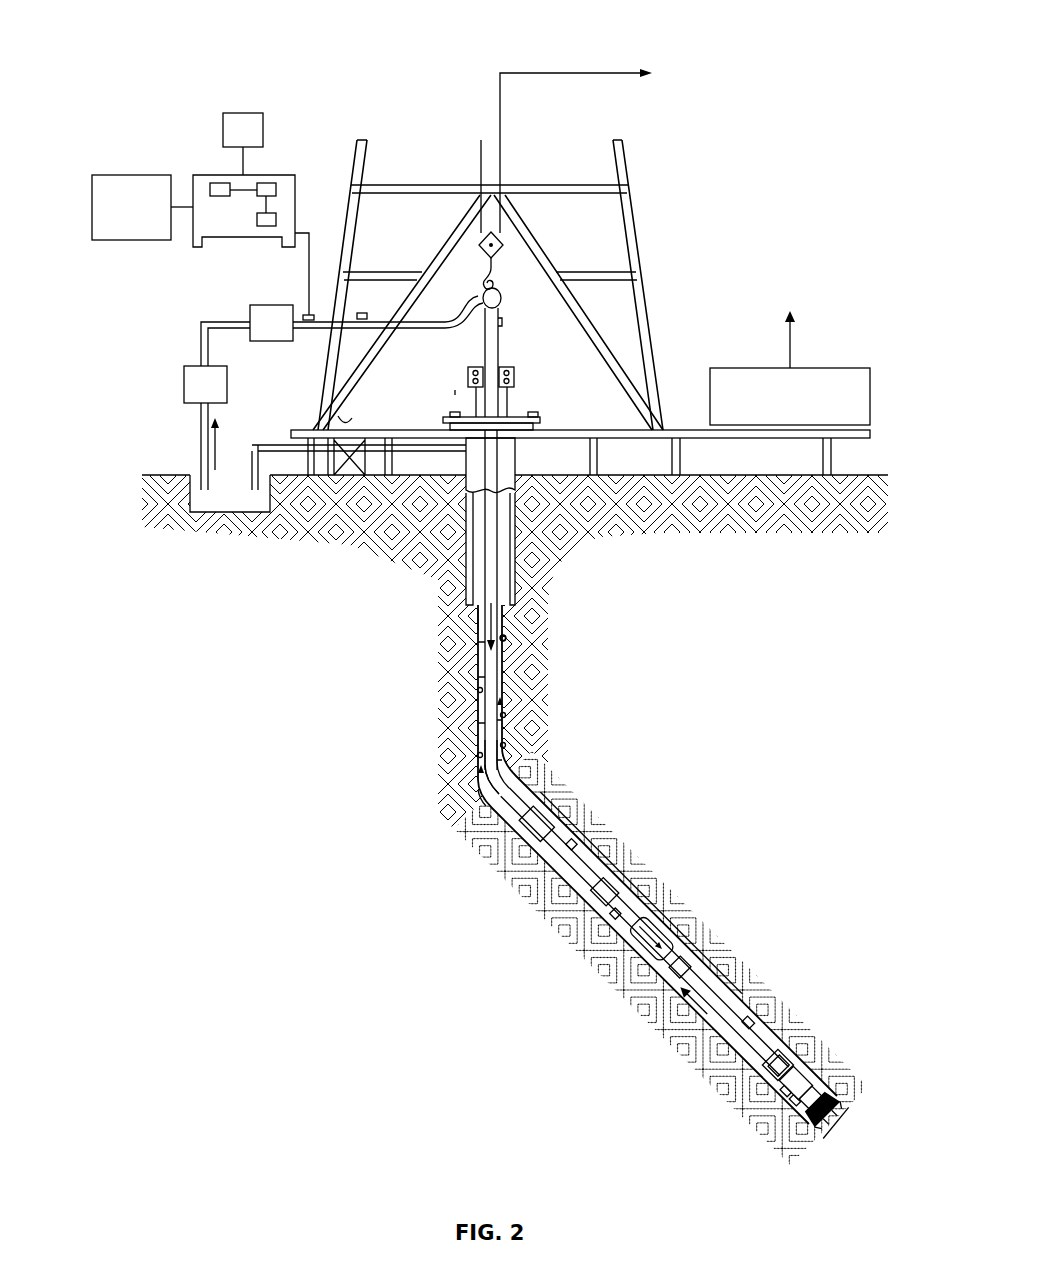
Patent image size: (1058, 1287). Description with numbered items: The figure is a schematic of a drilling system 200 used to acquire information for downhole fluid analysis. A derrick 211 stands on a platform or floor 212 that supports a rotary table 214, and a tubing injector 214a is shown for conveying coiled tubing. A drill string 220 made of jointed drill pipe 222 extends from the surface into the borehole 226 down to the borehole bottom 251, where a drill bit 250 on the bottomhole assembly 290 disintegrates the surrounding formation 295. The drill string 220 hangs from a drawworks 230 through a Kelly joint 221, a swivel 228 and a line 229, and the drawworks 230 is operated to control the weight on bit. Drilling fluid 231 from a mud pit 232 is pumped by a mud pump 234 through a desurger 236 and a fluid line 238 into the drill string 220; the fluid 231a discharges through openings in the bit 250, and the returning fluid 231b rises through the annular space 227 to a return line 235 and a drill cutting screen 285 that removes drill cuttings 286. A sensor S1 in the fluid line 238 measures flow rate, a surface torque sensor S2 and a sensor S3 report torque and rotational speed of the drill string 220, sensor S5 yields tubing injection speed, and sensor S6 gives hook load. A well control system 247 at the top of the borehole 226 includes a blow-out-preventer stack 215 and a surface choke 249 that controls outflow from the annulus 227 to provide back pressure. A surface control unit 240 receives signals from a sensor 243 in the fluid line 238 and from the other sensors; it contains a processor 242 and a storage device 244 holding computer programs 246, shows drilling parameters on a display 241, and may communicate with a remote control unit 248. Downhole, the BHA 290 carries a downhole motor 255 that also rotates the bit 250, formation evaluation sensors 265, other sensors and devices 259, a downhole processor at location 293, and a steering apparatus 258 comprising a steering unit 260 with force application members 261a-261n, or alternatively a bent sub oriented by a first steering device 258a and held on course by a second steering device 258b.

The drilling system 200 is at (178, 40).
The derrick 211 is at (645, 290).
The platform or floor 212 is at (665, 428).
The rotary table 214 is at (523, 415).
The tubing injector 214a is at (516, 378).
The surface blow-out-preventer stack 215 is at (540, 425).
The drill string 220 is at (509, 685).
The Kelly joint 221 is at (500, 356).
The drill pipe 222 is at (478, 673).
The borehole 226 is at (506, 750).
The annular space 227 is at (507, 786).
The swivel 228 is at (486, 310).
The line 229 is at (503, 168).
The drawworks 230 is at (812, 368).
The drilling fluid 231 is at (195, 511).
The drilling fluid 231a is at (478, 625).
The returning drilling fluid 231b is at (475, 812).
The source 232 is at (207, 508).
The mud pump 234 is at (184, 385).
The return line 235 is at (398, 480).
The desurger 236 is at (250, 313).
The fluid line 238 is at (320, 338).
The surface control unit 240 is at (220, 178).
The display/monitor 241 is at (243, 113).
The processor 242 is at (215, 183).
The sensor 243 is at (306, 315).
The storage device 244 is at (270, 183).
The computer programs 246 is at (266, 226).
The well control system 247 is at (452, 384).
The remote control unit 248 is at (158, 240).
The surface choke 249 is at (520, 482).
The drill bit 250 is at (836, 1090).
The bottom of the borehole 251 is at (797, 1160).
The downhole motor 255 is at (590, 865).
The steering apparatus 258 is at (788, 1058).
The first steering device 258a is at (795, 1128).
The second steering device 258b is at (785, 1105).
The sensors and devices 259 is at (812, 1066).
The steering unit 260 is at (750, 1085).
The force application members 261a-261n is at (790, 1040).
The formation evaluation sensors 265 is at (648, 1020).
The drill cutting screen 285 is at (345, 418).
The drill cuttings 286 is at (504, 640).
The bottomhole assembly 290 is at (740, 833).
The downhole processor location 293 is at (627, 968).
The formation 295 is at (776, 884).
The sensor S1 is at (362, 312).
The surface torque sensor S2 is at (540, 418).
The sensor S3 is at (450, 413).
The sensor S5 is at (500, 323).
The sensor S6 is at (500, 283).